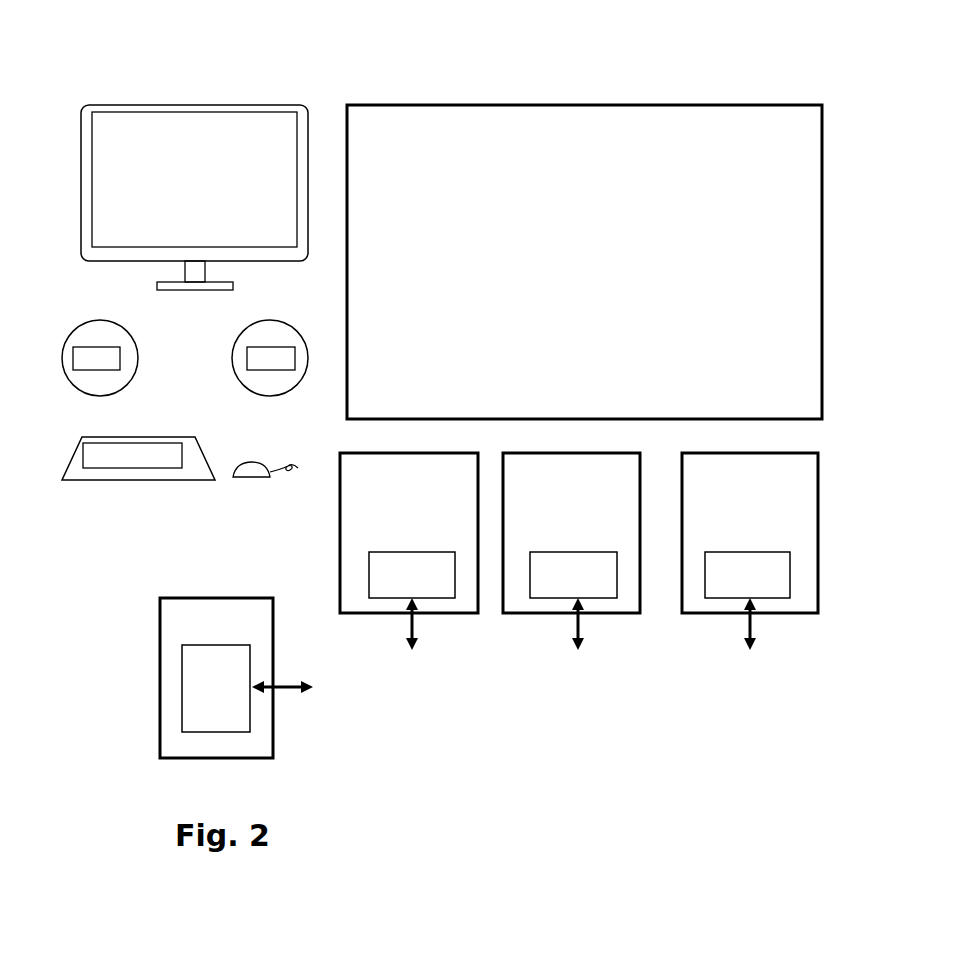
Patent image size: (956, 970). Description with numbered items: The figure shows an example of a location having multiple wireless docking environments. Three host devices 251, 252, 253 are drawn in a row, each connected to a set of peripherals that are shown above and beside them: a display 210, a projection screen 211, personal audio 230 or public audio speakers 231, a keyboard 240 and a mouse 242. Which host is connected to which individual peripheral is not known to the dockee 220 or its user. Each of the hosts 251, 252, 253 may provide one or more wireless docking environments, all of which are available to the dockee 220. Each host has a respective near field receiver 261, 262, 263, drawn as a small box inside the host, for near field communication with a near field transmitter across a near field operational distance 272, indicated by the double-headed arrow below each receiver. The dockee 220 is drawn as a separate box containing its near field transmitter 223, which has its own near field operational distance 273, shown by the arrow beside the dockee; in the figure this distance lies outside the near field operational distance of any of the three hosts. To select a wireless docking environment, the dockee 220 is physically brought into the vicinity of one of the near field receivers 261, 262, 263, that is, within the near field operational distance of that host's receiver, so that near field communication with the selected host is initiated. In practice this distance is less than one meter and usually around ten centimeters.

The display 210 is at (272, 105).
The projection screen 211 is at (573, 105).
The dockee 220 is at (273, 737).
The near field transmitter 223 is at (236, 703).
The personal audio 230 is at (78, 325).
The public audio speakers 231 is at (298, 333).
The keyboard 240 is at (145, 437).
The mouse 242 is at (273, 455).
The host device 251 is at (462, 613).
The host device 252 is at (625, 613).
The host device 253 is at (805, 613).
The near field receiver 261 is at (431, 590).
The near field receiver 262 is at (593, 590).
The near field receiver 263 is at (766, 590).
The near field operational distance 272 is at (570, 625).
The near field operational distance 273 is at (285, 683).